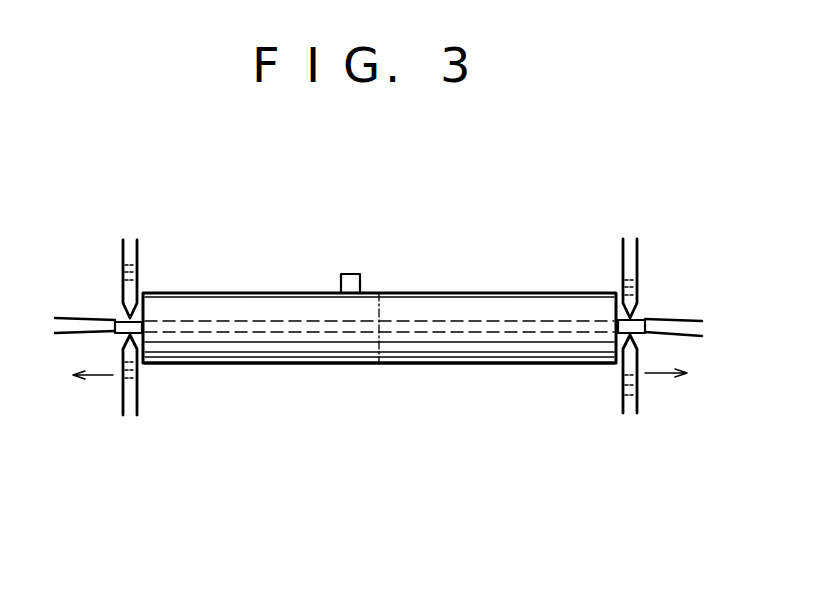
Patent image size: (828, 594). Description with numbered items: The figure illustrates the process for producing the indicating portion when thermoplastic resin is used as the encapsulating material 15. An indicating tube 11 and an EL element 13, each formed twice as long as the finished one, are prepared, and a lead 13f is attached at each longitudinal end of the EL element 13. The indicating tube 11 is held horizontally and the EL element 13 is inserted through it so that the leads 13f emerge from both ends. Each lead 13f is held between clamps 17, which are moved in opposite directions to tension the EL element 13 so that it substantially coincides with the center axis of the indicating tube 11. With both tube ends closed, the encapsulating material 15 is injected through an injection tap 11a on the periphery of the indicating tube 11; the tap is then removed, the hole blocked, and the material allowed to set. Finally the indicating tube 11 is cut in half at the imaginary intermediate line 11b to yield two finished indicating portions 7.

The indicating portion 7 is at (273, 369).
The indicating tube 11 is at (443, 291).
The injection tap 11a is at (342, 279).
The imaginary intermediate line 11b is at (378, 343).
The EL element 13 is at (455, 332).
The lead 13f is at (87, 316).
The encapsulating material 15 is at (350, 303).
The clamp 17 is at (137, 258).